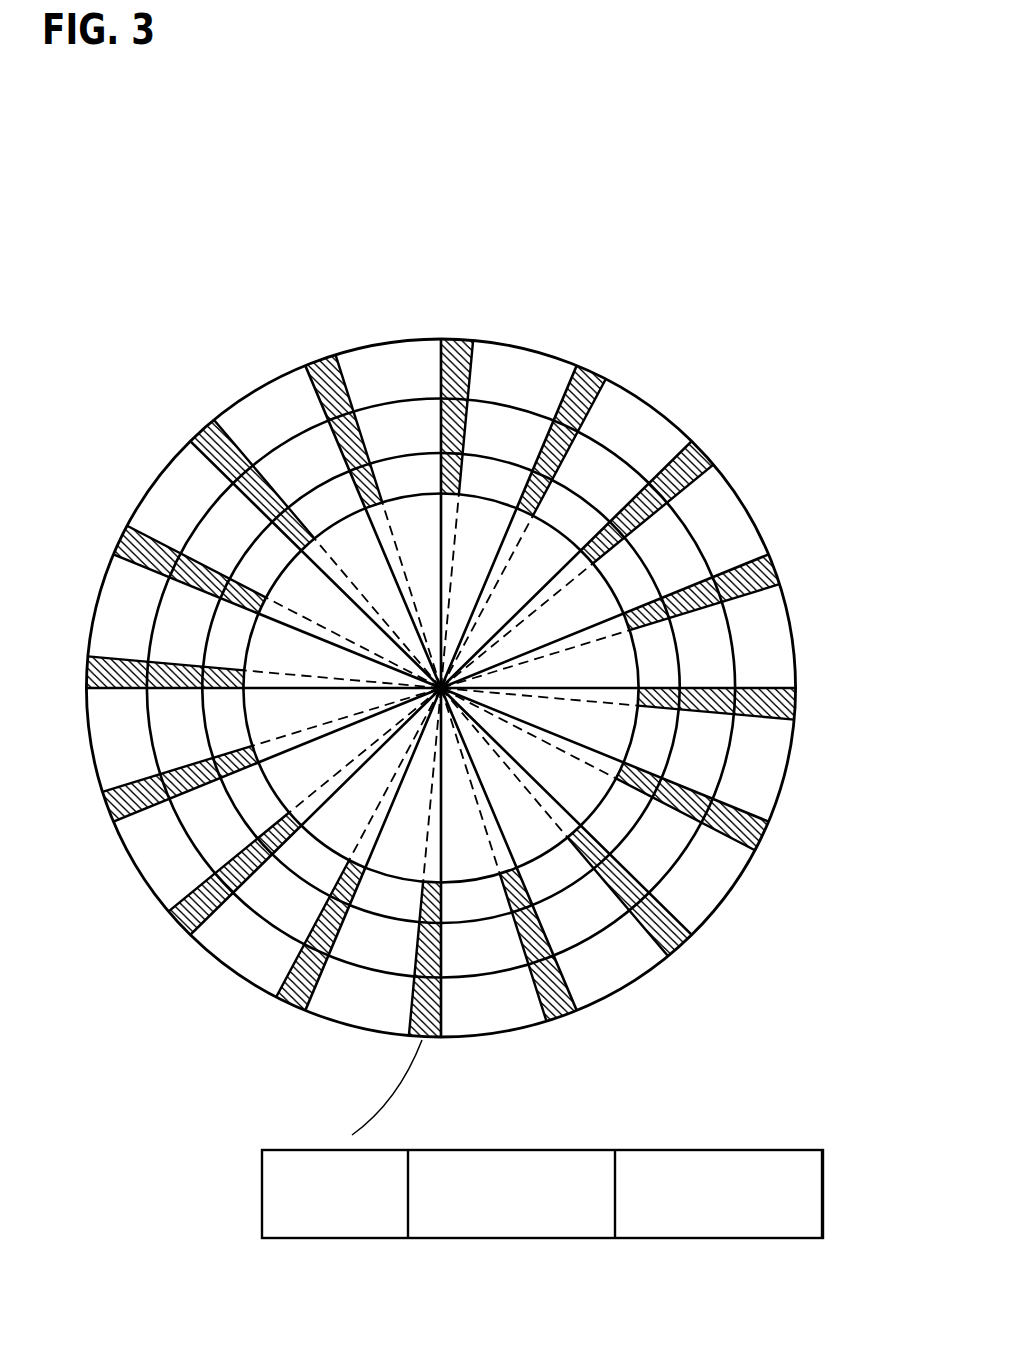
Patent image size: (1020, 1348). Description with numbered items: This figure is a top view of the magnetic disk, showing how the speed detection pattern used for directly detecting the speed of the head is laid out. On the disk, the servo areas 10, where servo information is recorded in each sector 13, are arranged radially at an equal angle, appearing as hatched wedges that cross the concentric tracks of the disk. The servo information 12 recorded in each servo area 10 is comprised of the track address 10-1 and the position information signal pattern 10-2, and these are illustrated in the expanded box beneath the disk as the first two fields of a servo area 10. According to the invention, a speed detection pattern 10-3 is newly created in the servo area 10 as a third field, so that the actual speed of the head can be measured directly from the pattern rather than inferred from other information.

The servo information 12 is at (535, 277).
The sector 13 is at (672, 550).
The servo area 10 is at (662, 593).
The track address 10-1 is at (305, 1241).
The position information signal pattern 10-2 is at (512, 1241).
The speed detection pattern 10-3 is at (719, 1241).